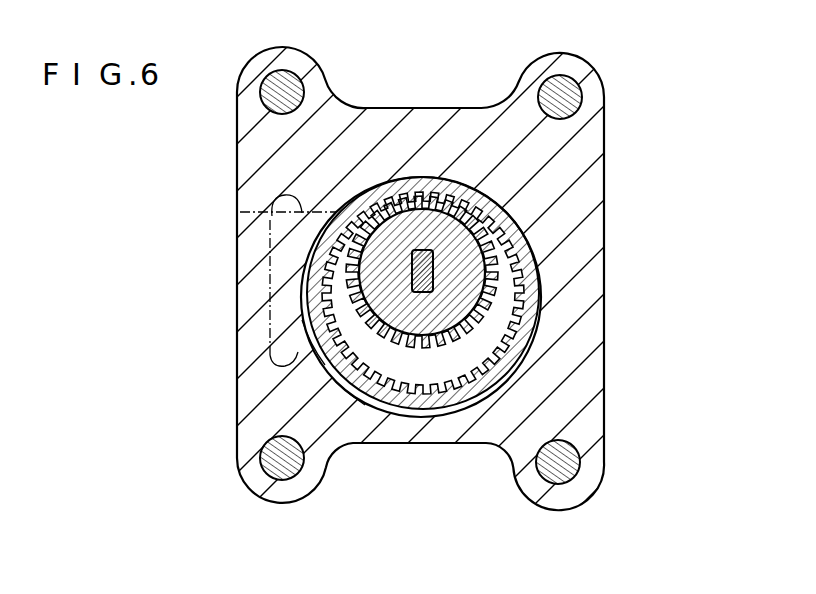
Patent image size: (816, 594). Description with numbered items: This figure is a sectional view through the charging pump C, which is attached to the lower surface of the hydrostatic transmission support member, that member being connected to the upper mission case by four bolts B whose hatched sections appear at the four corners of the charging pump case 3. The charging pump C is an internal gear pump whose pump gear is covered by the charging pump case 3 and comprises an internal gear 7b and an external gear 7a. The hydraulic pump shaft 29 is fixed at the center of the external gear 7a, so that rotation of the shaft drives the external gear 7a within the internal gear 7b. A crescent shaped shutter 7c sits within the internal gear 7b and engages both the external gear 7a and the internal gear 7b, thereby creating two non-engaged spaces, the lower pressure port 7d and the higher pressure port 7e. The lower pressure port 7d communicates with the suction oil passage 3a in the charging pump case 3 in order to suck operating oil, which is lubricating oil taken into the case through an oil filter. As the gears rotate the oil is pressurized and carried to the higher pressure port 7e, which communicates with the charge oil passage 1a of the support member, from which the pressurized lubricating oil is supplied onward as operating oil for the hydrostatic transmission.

The charge oil passage 1a is at (255, 210).
The charging pump case 3 is at (237, 316).
The suction oil passage 3a is at (513, 272).
The external gear 7a is at (470, 318).
The internal gear 7b is at (496, 293).
The crescent shaped shutter 7c is at (402, 398).
The lower pressure port 7d is at (543, 306).
The higher pressure port 7e is at (297, 323).
The hydraulic pump shaft 29 is at (446, 262).
The bolts B is at (298, 76).
The charging pump C is at (655, 173).